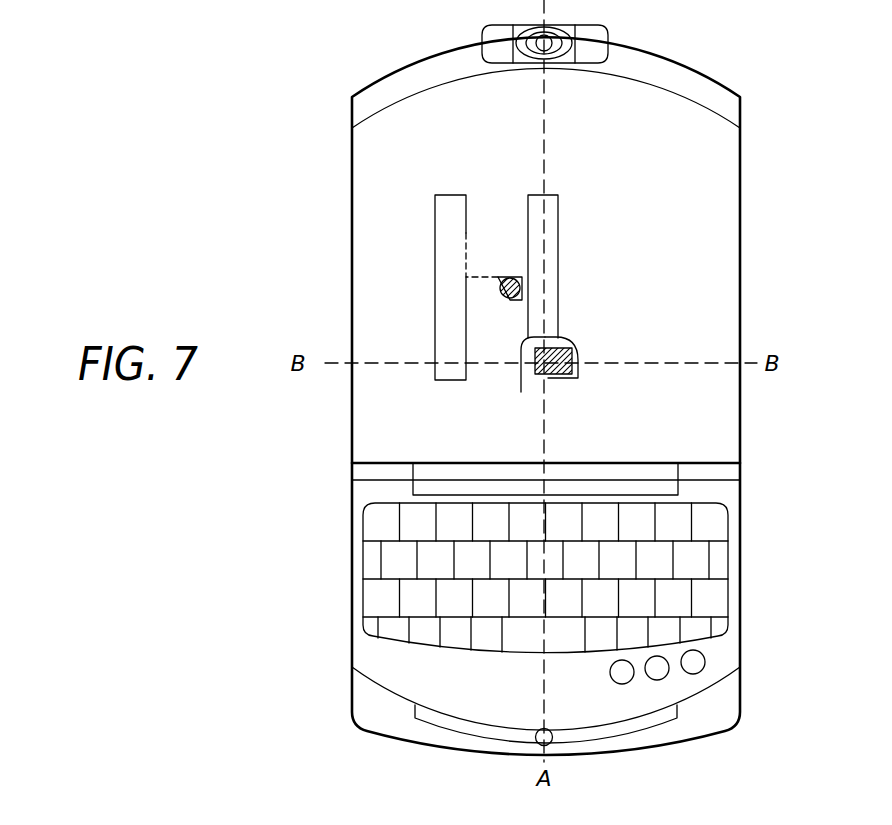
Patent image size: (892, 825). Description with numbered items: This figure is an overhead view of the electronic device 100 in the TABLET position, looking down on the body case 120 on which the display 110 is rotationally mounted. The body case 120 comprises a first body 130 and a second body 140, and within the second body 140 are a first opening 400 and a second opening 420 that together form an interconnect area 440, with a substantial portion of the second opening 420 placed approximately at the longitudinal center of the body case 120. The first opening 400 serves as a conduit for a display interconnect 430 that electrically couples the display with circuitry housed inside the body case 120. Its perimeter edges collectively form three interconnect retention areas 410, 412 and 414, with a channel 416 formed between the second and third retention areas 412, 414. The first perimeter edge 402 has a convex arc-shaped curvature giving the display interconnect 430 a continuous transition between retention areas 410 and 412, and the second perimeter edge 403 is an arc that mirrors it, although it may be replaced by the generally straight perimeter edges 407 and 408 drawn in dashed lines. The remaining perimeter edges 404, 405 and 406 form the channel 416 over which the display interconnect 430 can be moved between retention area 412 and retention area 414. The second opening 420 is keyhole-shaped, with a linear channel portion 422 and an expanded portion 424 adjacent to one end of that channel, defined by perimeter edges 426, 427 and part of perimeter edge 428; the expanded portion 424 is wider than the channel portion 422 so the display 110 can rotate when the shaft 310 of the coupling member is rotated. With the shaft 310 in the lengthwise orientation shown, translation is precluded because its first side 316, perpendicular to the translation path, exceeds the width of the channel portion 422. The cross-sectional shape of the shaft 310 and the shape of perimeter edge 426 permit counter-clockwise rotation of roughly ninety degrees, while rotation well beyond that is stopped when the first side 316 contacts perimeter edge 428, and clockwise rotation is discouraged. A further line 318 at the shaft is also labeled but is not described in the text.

The electronic device 100 is at (343, 143).
The display 110 is at (382, 110).
The body case 120 is at (335, 602).
The first body 130 is at (352, 200).
The second body 140 is at (352, 342).
The shaft 310 is at (562, 378).
The first side 316 is at (527, 375).
The ground line 318 is at (548, 378).
The first opening 400 is at (437, 400).
The first perimeter edge 402 is at (448, 380).
The second perimeter edge 403 is at (505, 273).
The perimeter edge 404 is at (457, 425).
The perimeter edge 405 is at (435, 287).
The perimeter edge 406 is at (447, 195).
The straight perimeter edge 407 is at (466, 258).
The straight perimeter edge 408 is at (477, 283).
The first interconnect retention area 410 is at (500, 265).
The second interconnect retention area 412 is at (455, 355).
The third interconnect retention area 414 is at (455, 205).
The channel 416 is at (443, 220).
The second opening 420 is at (588, 223).
The channel portion 422 is at (552, 285).
The expanded portion 424 is at (562, 342).
The perimeter edge 426 is at (580, 358).
The perimeter edge 427 is at (576, 378).
The perimeter edge 428 is at (530, 212).
The display interconnect 430 is at (500, 302).
The interconnect area 440 is at (592, 247).